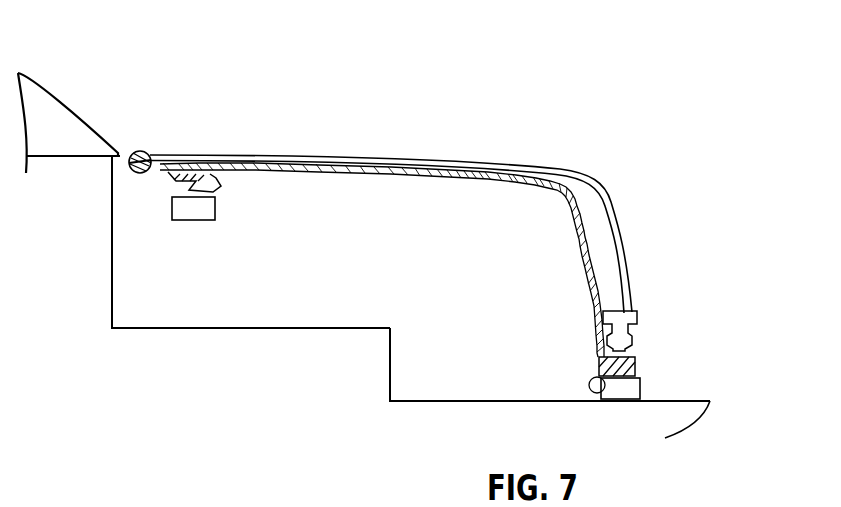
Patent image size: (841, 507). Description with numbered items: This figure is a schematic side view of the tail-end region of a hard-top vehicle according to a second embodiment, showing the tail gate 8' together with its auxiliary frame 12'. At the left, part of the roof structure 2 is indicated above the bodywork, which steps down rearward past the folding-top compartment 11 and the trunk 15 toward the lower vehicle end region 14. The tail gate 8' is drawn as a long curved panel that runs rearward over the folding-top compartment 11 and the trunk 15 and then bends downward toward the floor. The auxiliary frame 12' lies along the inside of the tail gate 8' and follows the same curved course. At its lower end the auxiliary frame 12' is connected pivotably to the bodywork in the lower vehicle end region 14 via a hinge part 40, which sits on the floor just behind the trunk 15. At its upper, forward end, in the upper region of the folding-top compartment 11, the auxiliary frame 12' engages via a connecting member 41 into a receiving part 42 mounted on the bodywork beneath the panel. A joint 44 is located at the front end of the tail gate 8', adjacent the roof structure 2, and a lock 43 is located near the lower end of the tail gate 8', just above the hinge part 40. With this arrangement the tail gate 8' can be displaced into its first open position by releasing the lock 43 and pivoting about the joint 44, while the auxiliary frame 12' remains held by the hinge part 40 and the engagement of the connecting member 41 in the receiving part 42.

The roof structure 2 is at (45, 87).
The tail gate 8' is at (391, 196).
The folding-top compartment 11 is at (300, 292).
The auxiliary frame 12' is at (410, 242).
The lower vehicle end region 14 is at (670, 419).
The trunk 15 is at (490, 357).
The hinge part 40 is at (630, 390).
The connecting member 41 is at (212, 193).
The receiving part 42 is at (188, 210).
The lock 43 is at (626, 314).
The joint 44 is at (141, 151).